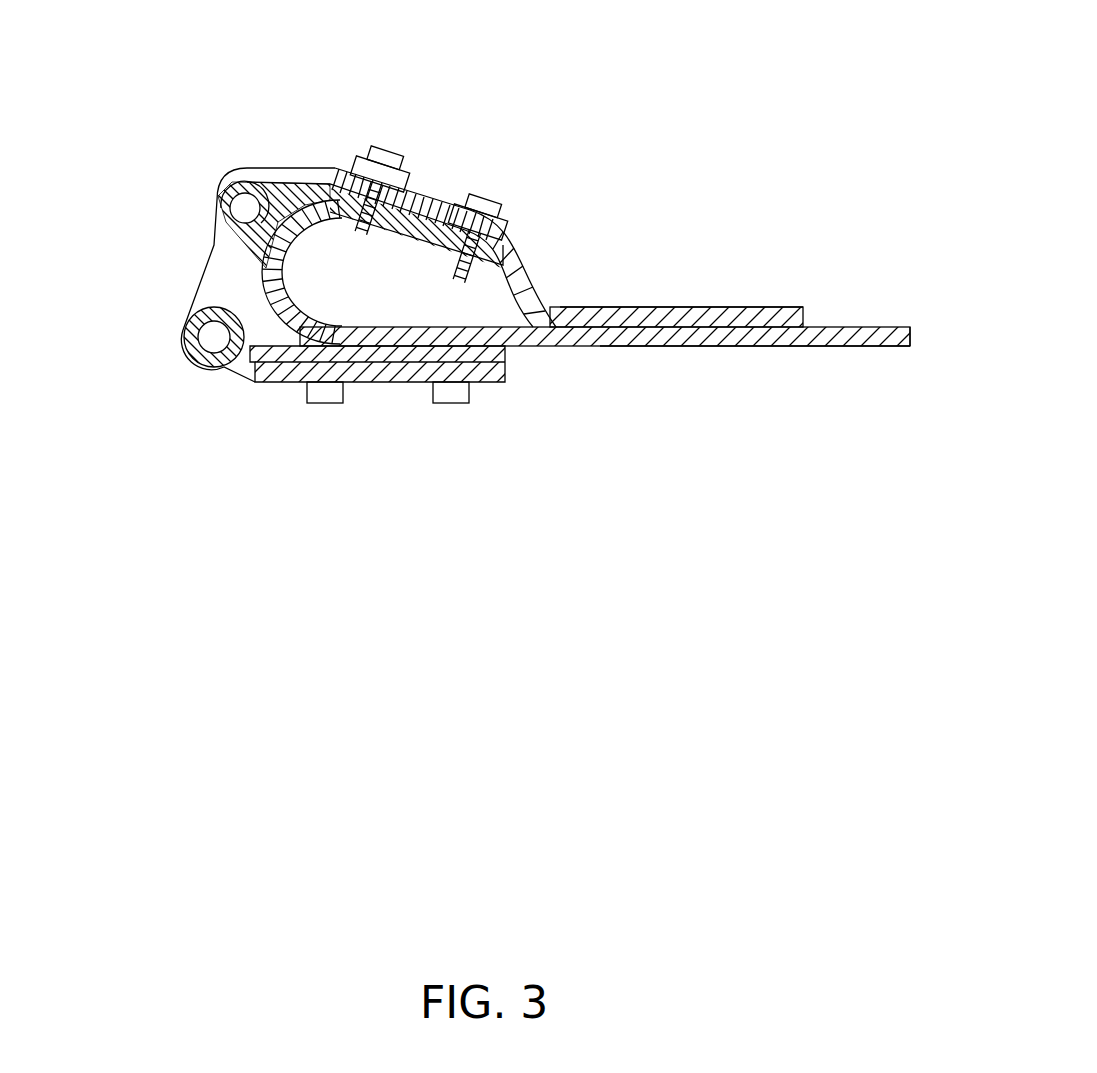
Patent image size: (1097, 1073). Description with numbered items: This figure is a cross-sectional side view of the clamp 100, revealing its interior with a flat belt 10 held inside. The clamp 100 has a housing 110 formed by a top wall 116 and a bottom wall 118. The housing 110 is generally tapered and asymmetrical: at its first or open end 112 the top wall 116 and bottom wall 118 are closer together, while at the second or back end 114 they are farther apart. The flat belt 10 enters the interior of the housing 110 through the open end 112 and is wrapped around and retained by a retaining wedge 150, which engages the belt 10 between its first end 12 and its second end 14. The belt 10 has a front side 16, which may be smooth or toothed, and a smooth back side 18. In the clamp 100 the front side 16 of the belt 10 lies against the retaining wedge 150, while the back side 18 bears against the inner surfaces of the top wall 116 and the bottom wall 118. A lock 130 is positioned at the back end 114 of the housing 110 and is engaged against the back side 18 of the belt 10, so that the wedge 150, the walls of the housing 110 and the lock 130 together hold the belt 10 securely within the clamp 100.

The clamp 100 is at (180, 108).
The housing 110 is at (204, 222).
The back end 114 is at (203, 283).
The lock 130 is at (282, 226).
The top wall 116 is at (437, 197).
The first or open end 112 is at (507, 267).
The retaining wedge 150 is at (402, 300).
The bottom wall 118 is at (487, 380).
The flat belt 10 is at (738, 330).
The first end 12 is at (803, 307).
The front side 16 is at (860, 327).
The second end 14 is at (883, 347).
The back side 18 is at (653, 307).